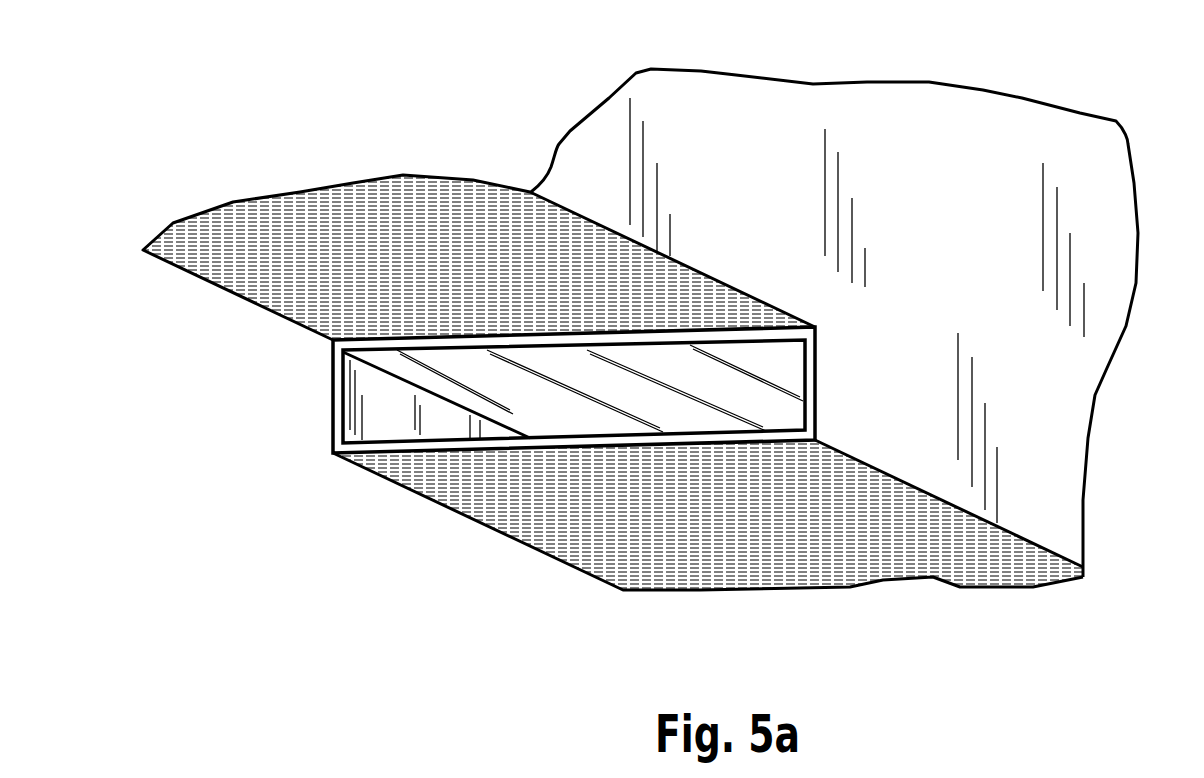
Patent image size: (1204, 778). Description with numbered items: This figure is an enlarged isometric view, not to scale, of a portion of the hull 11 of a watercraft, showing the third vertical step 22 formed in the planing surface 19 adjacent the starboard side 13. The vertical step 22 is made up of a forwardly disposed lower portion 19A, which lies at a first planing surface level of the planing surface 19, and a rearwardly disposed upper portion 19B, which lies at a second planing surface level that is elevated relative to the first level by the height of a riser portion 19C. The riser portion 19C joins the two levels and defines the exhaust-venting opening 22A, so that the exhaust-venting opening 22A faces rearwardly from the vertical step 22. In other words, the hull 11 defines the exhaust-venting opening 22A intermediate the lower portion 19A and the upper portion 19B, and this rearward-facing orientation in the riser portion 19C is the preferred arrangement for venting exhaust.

The hull 11 is at (1116, 121).
The starboard side 13 is at (1050, 512).
The planing surface 19 is at (616, 432).
The lower portion 19A is at (630, 558).
The upper portion 19B is at (243, 272).
The riser portion 19C is at (330, 405).
The third vertical step 22 is at (815, 388).
The exhaust-venting opening 22A is at (536, 413).